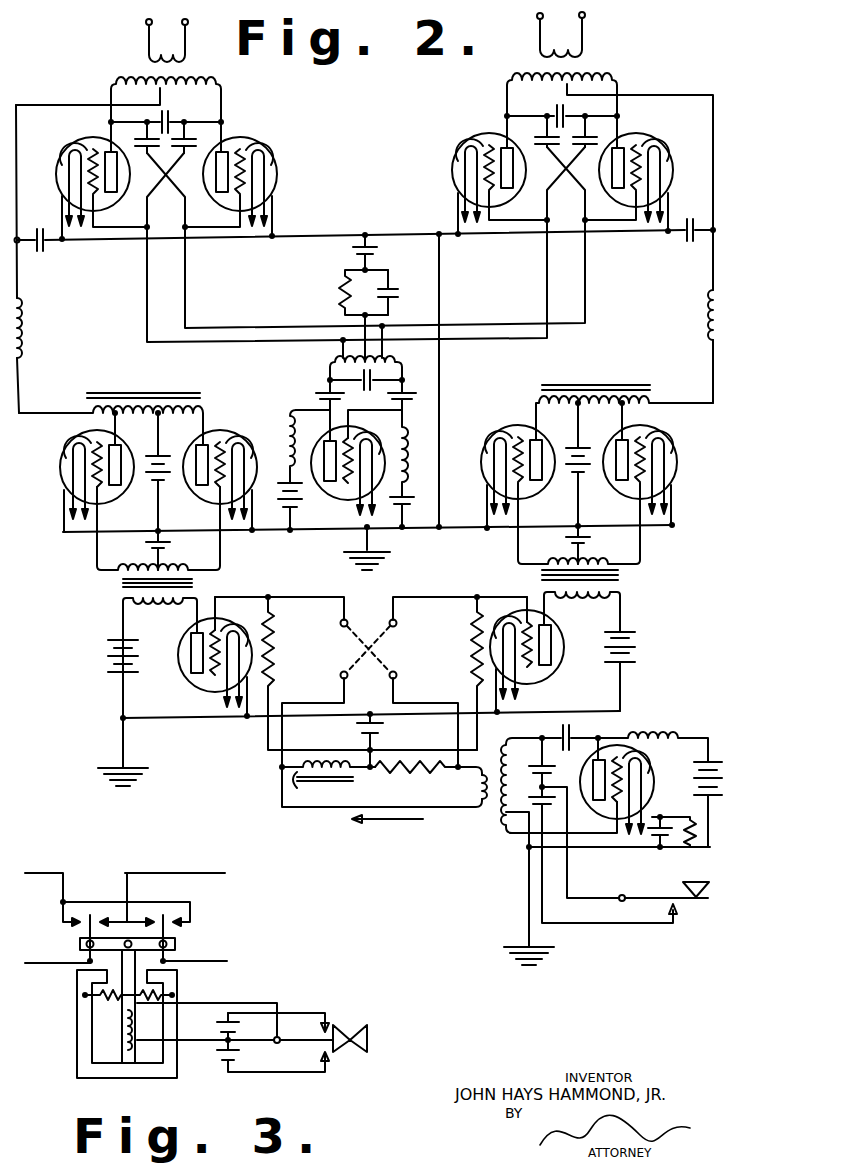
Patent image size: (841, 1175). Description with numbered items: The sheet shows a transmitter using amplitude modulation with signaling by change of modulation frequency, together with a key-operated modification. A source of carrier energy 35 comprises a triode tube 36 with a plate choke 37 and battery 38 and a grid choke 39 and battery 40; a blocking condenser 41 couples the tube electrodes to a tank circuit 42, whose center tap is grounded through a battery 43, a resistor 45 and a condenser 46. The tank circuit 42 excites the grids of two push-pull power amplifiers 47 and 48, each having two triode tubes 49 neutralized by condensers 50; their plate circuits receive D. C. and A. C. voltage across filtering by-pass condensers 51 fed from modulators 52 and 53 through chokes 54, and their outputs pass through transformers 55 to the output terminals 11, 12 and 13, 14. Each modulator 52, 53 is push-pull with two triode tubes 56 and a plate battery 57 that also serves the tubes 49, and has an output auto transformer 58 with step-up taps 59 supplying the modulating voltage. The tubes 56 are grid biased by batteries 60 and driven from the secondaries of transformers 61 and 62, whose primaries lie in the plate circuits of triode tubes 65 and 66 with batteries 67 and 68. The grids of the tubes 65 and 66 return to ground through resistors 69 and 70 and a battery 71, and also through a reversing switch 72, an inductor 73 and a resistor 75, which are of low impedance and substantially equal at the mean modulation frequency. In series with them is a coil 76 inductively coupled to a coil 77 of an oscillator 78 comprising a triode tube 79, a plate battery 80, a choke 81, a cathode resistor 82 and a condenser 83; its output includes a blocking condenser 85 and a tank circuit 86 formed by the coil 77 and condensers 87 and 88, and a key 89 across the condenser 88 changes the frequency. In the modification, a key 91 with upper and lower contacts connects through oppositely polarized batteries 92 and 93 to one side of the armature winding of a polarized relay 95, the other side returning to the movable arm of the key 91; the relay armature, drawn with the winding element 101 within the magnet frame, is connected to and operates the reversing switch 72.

In FIG. 2, the output terminal 11 is at (146, 25).
In FIG. 2, the output terminal 12 is at (183, 27).
In FIG. 2, the output terminal 13 is at (538, 18).
In FIG. 2, the output terminal 14 is at (585, 18).
In FIG. 2, the transformer 55 is at (146, 62).
In FIG. 2, the triode tube 49 is at (68, 152).
In FIG. 2, the condenser 50 is at (366, 136).
In FIG. 2, the filtering by-pass condenser 51 is at (42, 251).
In FIG. 2, the power amplifier 47 is at (332, 176).
In FIG. 2, the power amplifier 48 is at (425, 176).
In FIG. 2, the choke 54 is at (26, 330).
In FIG. 2, the battery 43 is at (352, 252).
In FIG. 2, the resistor 45 is at (340, 300).
In FIG. 2, the condenser 46 is at (398, 292).
In FIG. 2, the tank circuit 42 is at (386, 358).
In FIG. 2, the blocking condenser 41 is at (386, 393).
In FIG. 2, the source of carrier energy 35 is at (294, 400).
In FIG. 2, the plate choke 37 is at (287, 443).
In FIG. 2, the battery 38 is at (304, 494).
In FIG. 2, the triode tube 36 is at (368, 444).
In FIG. 2, the grid choke 39 is at (409, 441).
In FIG. 2, the battery 40 is at (410, 504).
In FIG. 2, the output auto transformer 58 is at (200, 405).
In FIG. 2, the step-up tap 59 is at (114, 416).
In FIG. 2, the modulator 52 is at (36, 481).
In FIG. 2, the modulator 53 is at (732, 470).
In FIG. 2, the triode tube 56 is at (61, 479).
In FIG. 2, the plate battery 57 is at (150, 484).
In FIG. 2, the battery 60 is at (147, 545).
In FIG. 2, the transformer 61 is at (122, 585).
In FIG. 2, the transformer 62 is at (620, 580).
In FIG. 2, the battery 67 is at (106, 657).
In FIG. 2, the battery 68 is at (633, 649).
In FIG. 2, the triode tube 65 is at (200, 682).
In FIG. 2, the triode tube 66 is at (547, 673).
In FIG. 2, the resistor 69 is at (278, 651).
In FIG. 2, the resistor 70 is at (468, 646).
In FIG. 2, the reversing switch 72 is at (360, 651).
In FIG. 3, the reversing switch 72 is at (82, 934).
In FIG. 2, the battery 71 is at (356, 731).
In FIG. 2, the inductor 73 is at (328, 783).
In FIG. 2, the resistor 75 is at (407, 779).
In FIG. 2, the coil 76 is at (477, 787).
In FIG. 2, the coil 77 is at (512, 752).
In FIG. 2, the blocking condenser 85 is at (569, 736).
In FIG. 2, the choke 81 is at (656, 733).
In FIG. 2, the oscillator 78 is at (687, 767).
In FIG. 2, the triode tube 79 is at (653, 789).
In FIG. 2, the plate battery 80 is at (716, 791).
In FIG. 2, the cathode resistor 82 is at (679, 845).
In FIG. 2, the condenser 83 is at (657, 845).
In FIG. 2, the tank circuit 86 is at (534, 797).
In FIG. 2, the condenser 87 is at (550, 772).
In FIG. 2, the condenser 88 is at (557, 804).
In FIG. 2, the key 89 is at (680, 901).
In FIG. 3, the polarized relay 95 is at (82, 1035).
In FIG. 3, the armature 101 is at (127, 1013).
In FIG. 3, the battery 92 is at (220, 1015).
In FIG. 3, the battery 93 is at (222, 1062).
In FIG. 3, the key 91 is at (333, 1030).